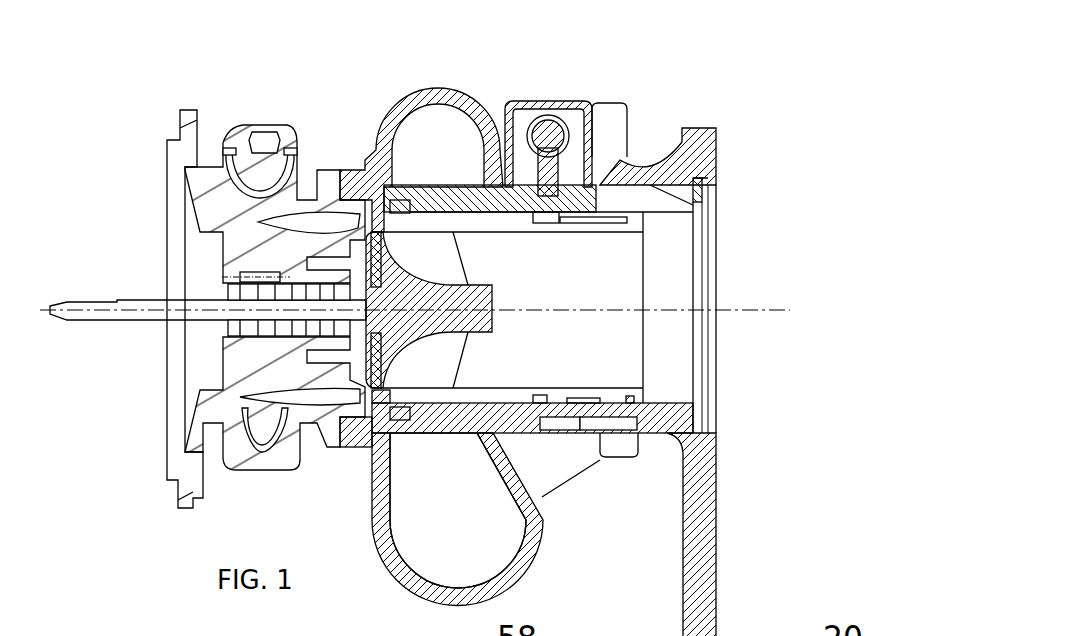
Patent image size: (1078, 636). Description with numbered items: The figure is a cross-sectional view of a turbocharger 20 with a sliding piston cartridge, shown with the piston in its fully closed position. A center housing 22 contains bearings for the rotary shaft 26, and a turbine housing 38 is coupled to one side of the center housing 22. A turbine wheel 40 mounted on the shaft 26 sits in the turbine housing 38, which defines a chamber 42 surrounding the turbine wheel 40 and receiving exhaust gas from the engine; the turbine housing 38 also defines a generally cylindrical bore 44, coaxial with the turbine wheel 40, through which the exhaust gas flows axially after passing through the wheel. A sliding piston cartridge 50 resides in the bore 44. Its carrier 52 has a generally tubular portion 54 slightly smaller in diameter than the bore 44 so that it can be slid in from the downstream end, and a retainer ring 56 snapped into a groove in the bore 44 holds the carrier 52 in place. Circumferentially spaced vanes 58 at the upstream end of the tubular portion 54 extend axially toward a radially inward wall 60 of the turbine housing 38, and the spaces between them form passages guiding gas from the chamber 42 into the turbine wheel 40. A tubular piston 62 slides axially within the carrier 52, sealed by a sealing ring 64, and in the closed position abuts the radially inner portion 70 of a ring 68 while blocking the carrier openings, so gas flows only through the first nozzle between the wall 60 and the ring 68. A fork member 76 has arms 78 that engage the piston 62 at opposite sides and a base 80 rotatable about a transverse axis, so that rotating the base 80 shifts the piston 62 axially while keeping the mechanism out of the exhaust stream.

The turbocharger 20 is at (683, 92).
The center housing 22 is at (293, 180).
The rotary shaft 26 is at (147, 300).
The turbine housing 38 is at (540, 522).
The turbine wheel 40 is at (457, 270).
The chamber 42 is at (430, 550).
The bore 44 is at (668, 430).
The sliding piston cartridge 50 is at (671, 396).
The carrier 52 is at (676, 205).
The tubular portion 54 is at (500, 417).
The retainer ring 56 is at (704, 192).
The vanes 58 is at (393, 197).
The wall 60 is at (412, 415).
The piston 62 is at (580, 227).
The sealing ring 64 is at (631, 396).
The ring 68 is at (410, 408).
The radially inner portion 70 is at (427, 187).
The fork member 76 is at (548, 150).
The arms 78 is at (550, 168).
The base 80 is at (568, 120).